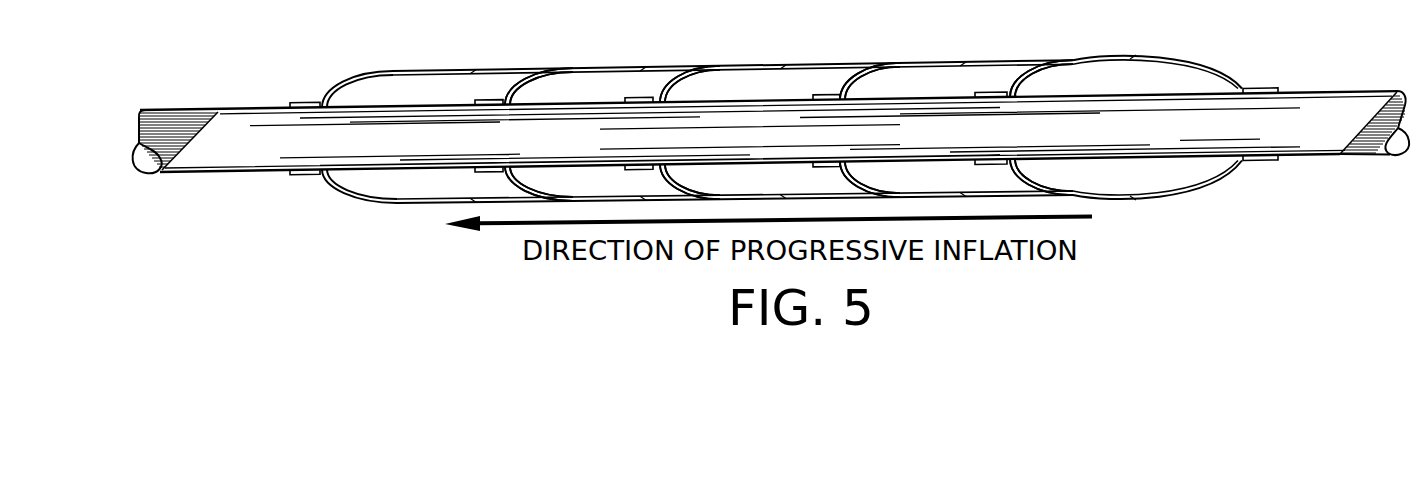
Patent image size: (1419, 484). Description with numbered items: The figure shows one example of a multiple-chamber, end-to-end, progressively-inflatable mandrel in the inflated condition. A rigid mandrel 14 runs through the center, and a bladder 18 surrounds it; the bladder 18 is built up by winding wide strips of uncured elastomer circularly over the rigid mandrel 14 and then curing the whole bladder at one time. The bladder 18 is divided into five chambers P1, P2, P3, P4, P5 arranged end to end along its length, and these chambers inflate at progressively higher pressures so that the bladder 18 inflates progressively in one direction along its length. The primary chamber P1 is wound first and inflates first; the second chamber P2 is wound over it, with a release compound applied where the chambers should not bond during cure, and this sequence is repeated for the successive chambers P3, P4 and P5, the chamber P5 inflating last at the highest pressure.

The rigid mandrel 14 is at (235, 175).
The bladder 18 is at (1200, 194).
The first-inflated chamber P1 is at (1133, 77).
The second chamber P2 is at (956, 81).
The third chamber P3 is at (780, 84).
The fourth chamber P4 is at (606, 86).
The fifth chamber P5 is at (430, 88).